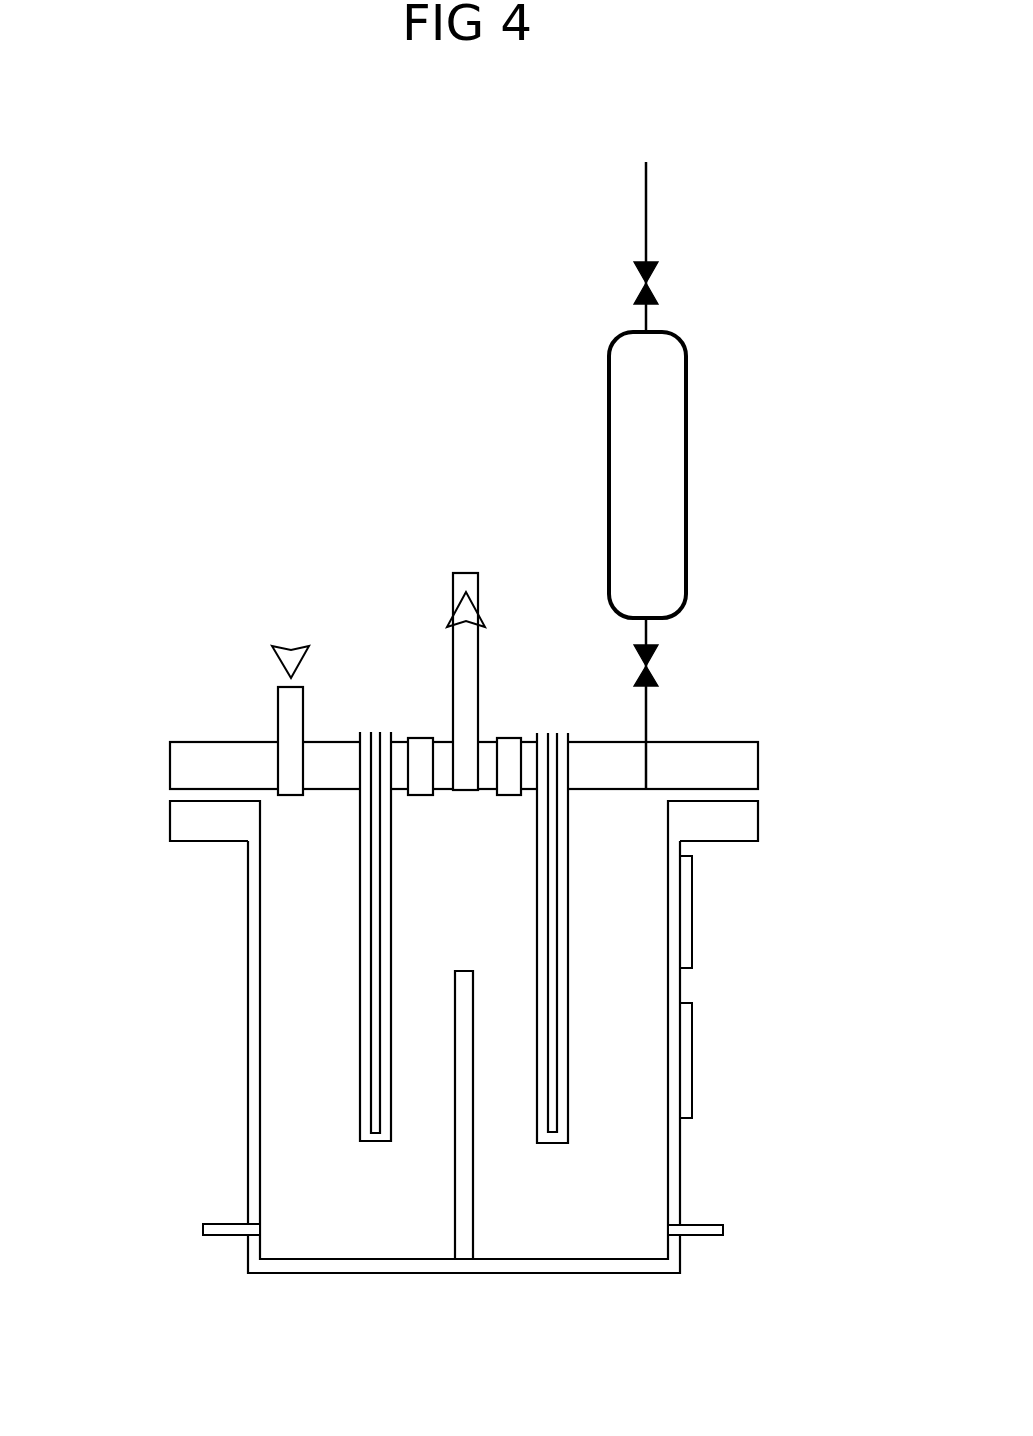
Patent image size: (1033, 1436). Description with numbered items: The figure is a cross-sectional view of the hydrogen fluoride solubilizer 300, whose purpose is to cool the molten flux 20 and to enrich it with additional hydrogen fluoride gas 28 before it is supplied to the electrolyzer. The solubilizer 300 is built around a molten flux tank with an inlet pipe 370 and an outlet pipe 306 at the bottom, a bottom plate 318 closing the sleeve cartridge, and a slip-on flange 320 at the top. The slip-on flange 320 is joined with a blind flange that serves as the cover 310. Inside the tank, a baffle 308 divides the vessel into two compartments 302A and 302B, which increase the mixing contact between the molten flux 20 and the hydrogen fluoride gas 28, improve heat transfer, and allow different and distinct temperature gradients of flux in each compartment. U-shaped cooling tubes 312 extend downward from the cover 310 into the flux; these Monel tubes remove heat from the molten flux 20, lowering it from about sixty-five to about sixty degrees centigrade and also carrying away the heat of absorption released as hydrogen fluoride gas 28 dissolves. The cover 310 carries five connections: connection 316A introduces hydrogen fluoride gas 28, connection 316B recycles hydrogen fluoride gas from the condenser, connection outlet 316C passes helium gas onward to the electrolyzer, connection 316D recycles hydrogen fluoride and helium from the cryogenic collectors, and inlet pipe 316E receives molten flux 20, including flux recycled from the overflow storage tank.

The hydrogen fluoride (HF) gas 28 is at (768, 458).
The hydrogen fluoride solubilizer 300 is at (477, 430).
The compartment 302A is at (368, 1208).
The compartment 302B is at (577, 1208).
The outlet pipe 306 is at (714, 1244).
The baffle 308 is at (476, 972).
The cover 310 is at (464, 765).
The U-shaped cooling tubes 312 is at (357, 1102).
The connection 316A is at (642, 775).
The connection 316B is at (508, 733).
The connection outlet 316C is at (465, 664).
The connection 316D is at (423, 735).
The inlet pipe 316E is at (275, 724).
The bottom plate 318 is at (464, 1281).
The slip-on flange 320 is at (494, 821).
The inlet pipe 370 is at (226, 1244).
The molten flux 20 is at (296, 641).